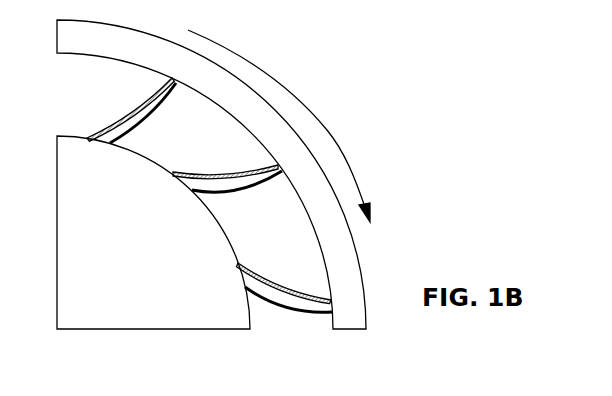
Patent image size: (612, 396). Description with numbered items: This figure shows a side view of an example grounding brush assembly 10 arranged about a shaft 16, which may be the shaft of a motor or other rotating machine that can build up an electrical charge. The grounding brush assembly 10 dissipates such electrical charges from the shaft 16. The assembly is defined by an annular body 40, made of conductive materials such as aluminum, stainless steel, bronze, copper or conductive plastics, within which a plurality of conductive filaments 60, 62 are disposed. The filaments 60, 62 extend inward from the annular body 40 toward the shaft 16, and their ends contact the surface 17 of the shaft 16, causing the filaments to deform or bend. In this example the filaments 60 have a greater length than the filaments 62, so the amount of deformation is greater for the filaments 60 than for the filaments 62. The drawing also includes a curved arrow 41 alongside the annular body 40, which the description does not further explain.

The grounding brush assembly 10 is at (407, 165).
The shaft 16 is at (153, 232).
The surface 17 is at (230, 235).
The annular body 40 is at (108, 23).
The rotation direction 41 is at (305, 101).
The filaments 60 is at (123, 118).
The filaments 62 is at (149, 114).